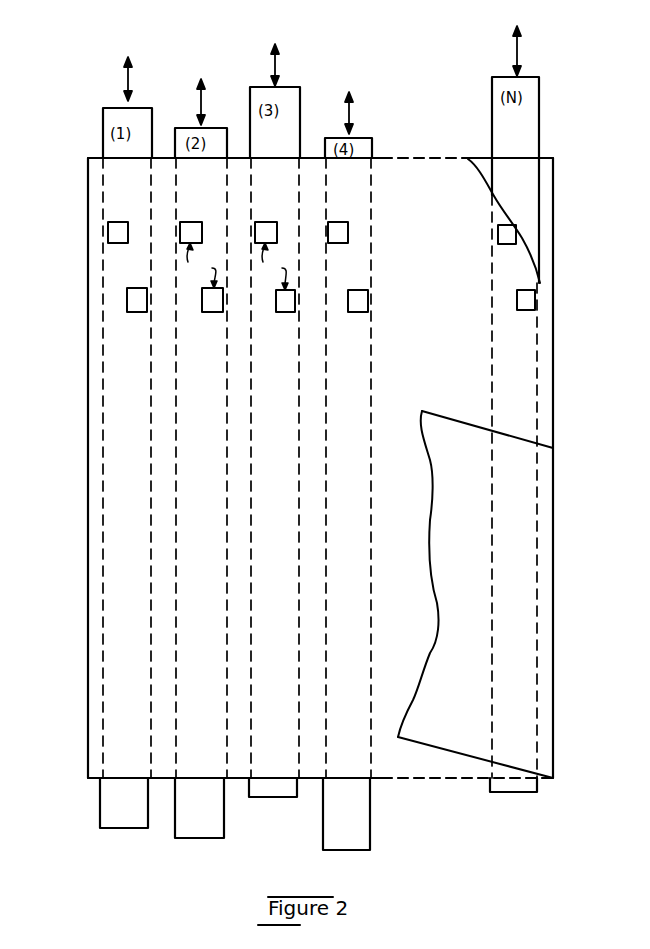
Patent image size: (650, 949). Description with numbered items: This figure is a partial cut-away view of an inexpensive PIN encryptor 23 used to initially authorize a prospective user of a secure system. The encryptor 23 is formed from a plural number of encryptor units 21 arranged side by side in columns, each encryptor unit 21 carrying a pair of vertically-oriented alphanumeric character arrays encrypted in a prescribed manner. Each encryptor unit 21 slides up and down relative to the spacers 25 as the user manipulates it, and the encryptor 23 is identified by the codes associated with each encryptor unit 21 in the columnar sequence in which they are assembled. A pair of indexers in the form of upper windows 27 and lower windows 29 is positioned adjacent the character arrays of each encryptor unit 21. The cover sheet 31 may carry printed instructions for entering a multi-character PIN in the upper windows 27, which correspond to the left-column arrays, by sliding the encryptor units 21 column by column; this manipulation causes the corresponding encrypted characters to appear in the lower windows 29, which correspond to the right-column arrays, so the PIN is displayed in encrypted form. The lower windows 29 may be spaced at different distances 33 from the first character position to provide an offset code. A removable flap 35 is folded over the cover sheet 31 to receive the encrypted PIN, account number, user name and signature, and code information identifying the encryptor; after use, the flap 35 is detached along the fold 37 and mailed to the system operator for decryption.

The encryptor unit 21 is at (128, 828).
The PIN encryptor 23 is at (437, 768).
The spacers 25 is at (173, 473).
The upper windows 27 is at (108, 225).
The lower windows 29 is at (147, 300).
The cover sheet 31 is at (540, 283).
The indexer spacings 33 is at (212, 278).
The removable flap 35 is at (440, 418).
The fold 37 is at (553, 700).